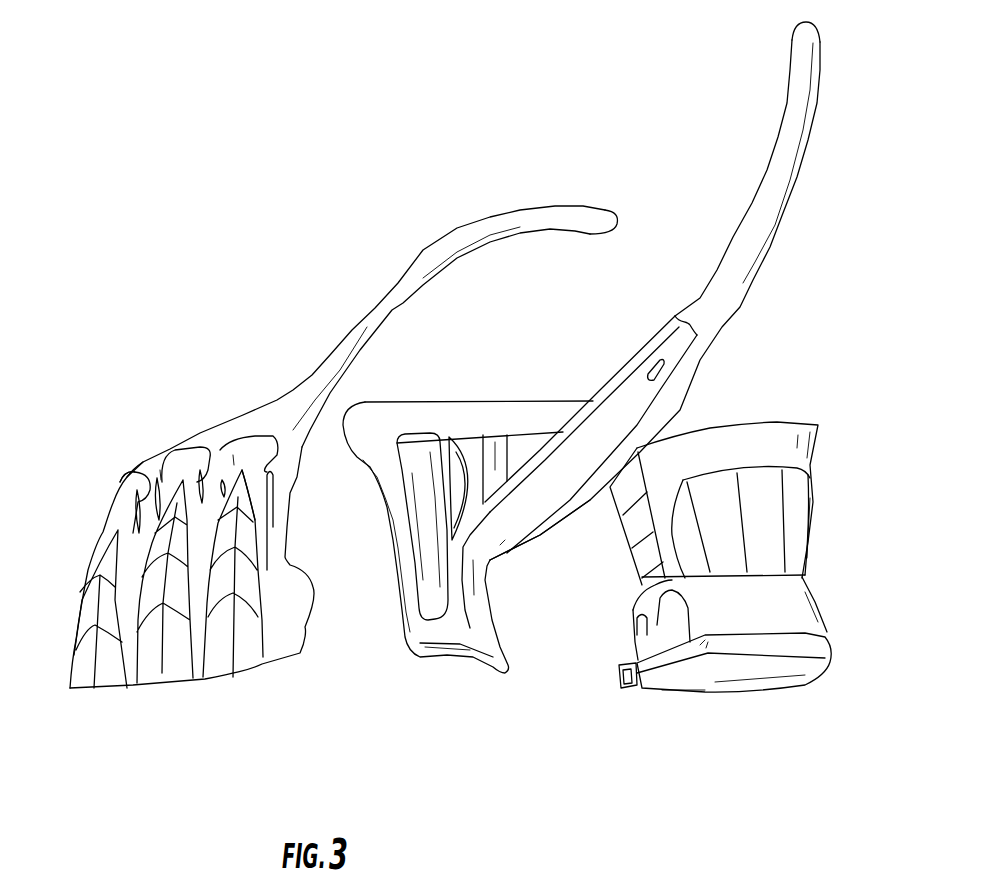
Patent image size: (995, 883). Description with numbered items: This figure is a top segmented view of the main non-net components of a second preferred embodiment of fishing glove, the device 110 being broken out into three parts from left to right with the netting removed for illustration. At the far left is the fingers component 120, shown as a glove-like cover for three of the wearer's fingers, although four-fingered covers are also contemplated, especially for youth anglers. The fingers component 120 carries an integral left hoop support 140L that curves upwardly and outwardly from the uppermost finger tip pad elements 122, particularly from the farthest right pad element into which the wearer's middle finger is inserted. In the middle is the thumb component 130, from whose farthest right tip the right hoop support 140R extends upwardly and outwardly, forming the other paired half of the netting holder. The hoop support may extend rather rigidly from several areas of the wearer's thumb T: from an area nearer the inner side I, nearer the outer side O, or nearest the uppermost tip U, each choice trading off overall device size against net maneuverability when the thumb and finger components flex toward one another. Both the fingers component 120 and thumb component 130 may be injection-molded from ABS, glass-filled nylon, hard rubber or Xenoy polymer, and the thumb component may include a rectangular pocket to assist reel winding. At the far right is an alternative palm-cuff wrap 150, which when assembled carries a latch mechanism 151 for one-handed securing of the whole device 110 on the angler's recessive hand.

The device 110 is at (837, 763).
The fingers component 120 is at (245, 705).
The finger tip pad elements 122 is at (246, 420).
The thumb component 130 is at (465, 683).
The left hoop support 140L is at (350, 318).
The right hoop support 140R is at (652, 295).
The palm-cuff wrap 150 is at (714, 590).
The latch mechanism 151 is at (620, 678).
The inner side of thumb I is at (632, 358).
The uppermost tip of thumb U is at (683, 318).
The outer side of thumb O is at (660, 388).
The thumb T is at (558, 478).